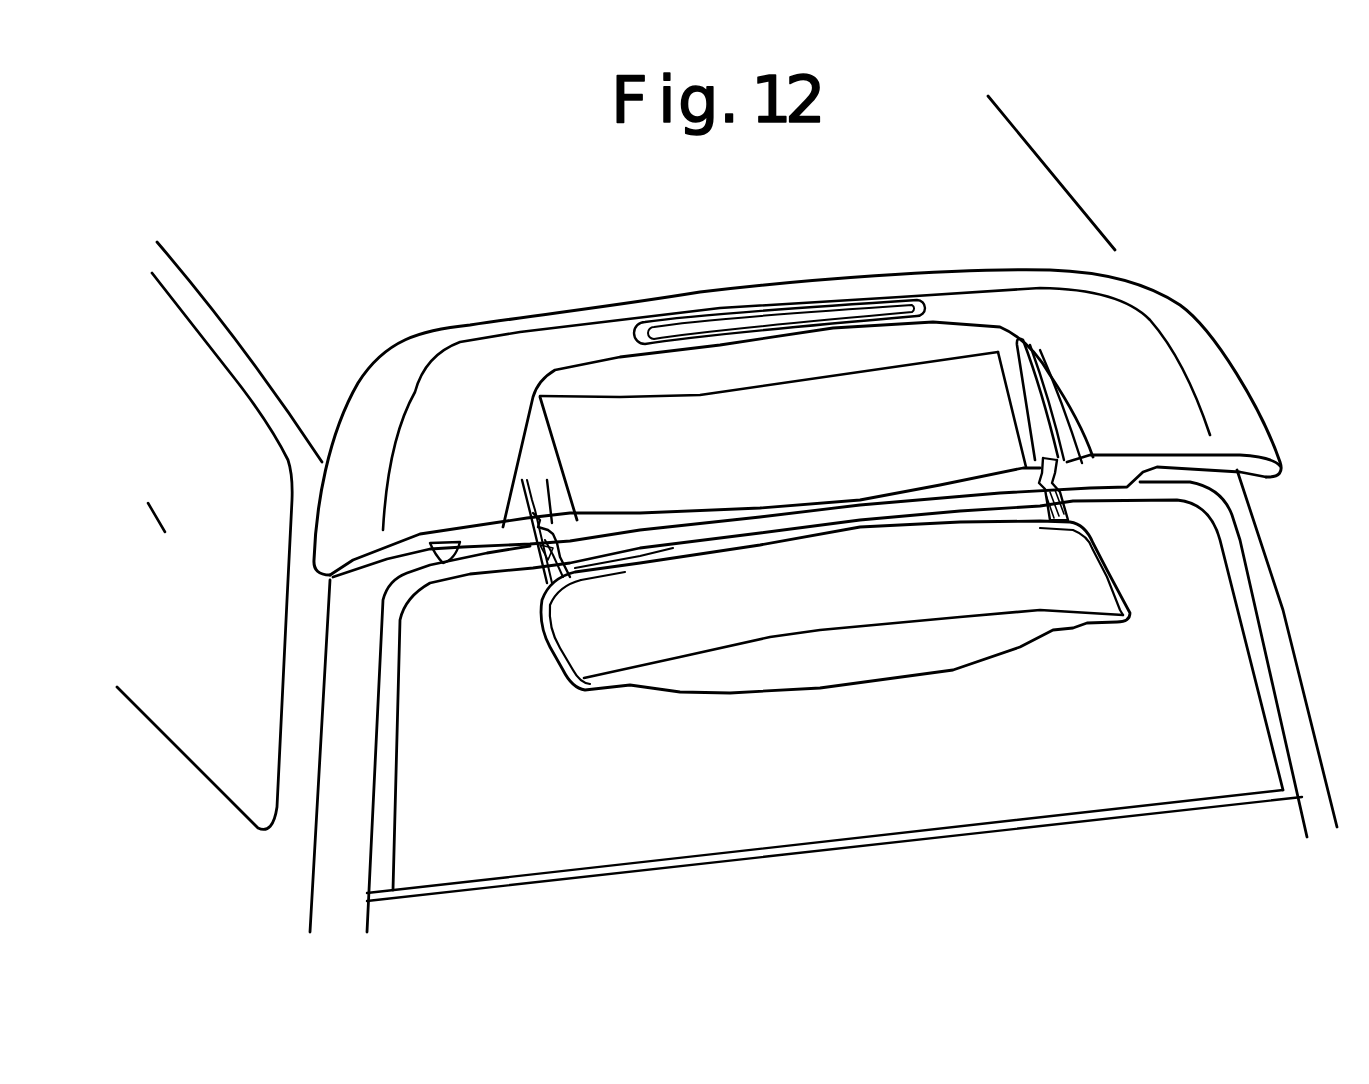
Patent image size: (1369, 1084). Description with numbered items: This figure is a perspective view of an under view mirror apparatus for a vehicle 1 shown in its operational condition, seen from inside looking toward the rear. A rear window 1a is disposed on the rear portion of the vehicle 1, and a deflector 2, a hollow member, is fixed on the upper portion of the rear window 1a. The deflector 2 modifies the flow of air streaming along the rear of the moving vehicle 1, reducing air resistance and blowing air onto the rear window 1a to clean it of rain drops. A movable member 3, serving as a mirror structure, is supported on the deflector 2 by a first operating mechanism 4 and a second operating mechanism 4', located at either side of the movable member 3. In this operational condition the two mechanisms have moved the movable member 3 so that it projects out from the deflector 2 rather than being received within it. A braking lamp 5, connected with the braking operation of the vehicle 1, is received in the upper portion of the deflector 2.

The vehicle 1 is at (1058, 166).
The rear window 1a is at (547, 813).
The deflector 2 is at (1177, 337).
The movable member 3 is at (858, 660).
The first operating mechanism 4 is at (1185, 510).
The second operating mechanism 4' is at (519, 600).
The braking lamp 5 is at (797, 312).